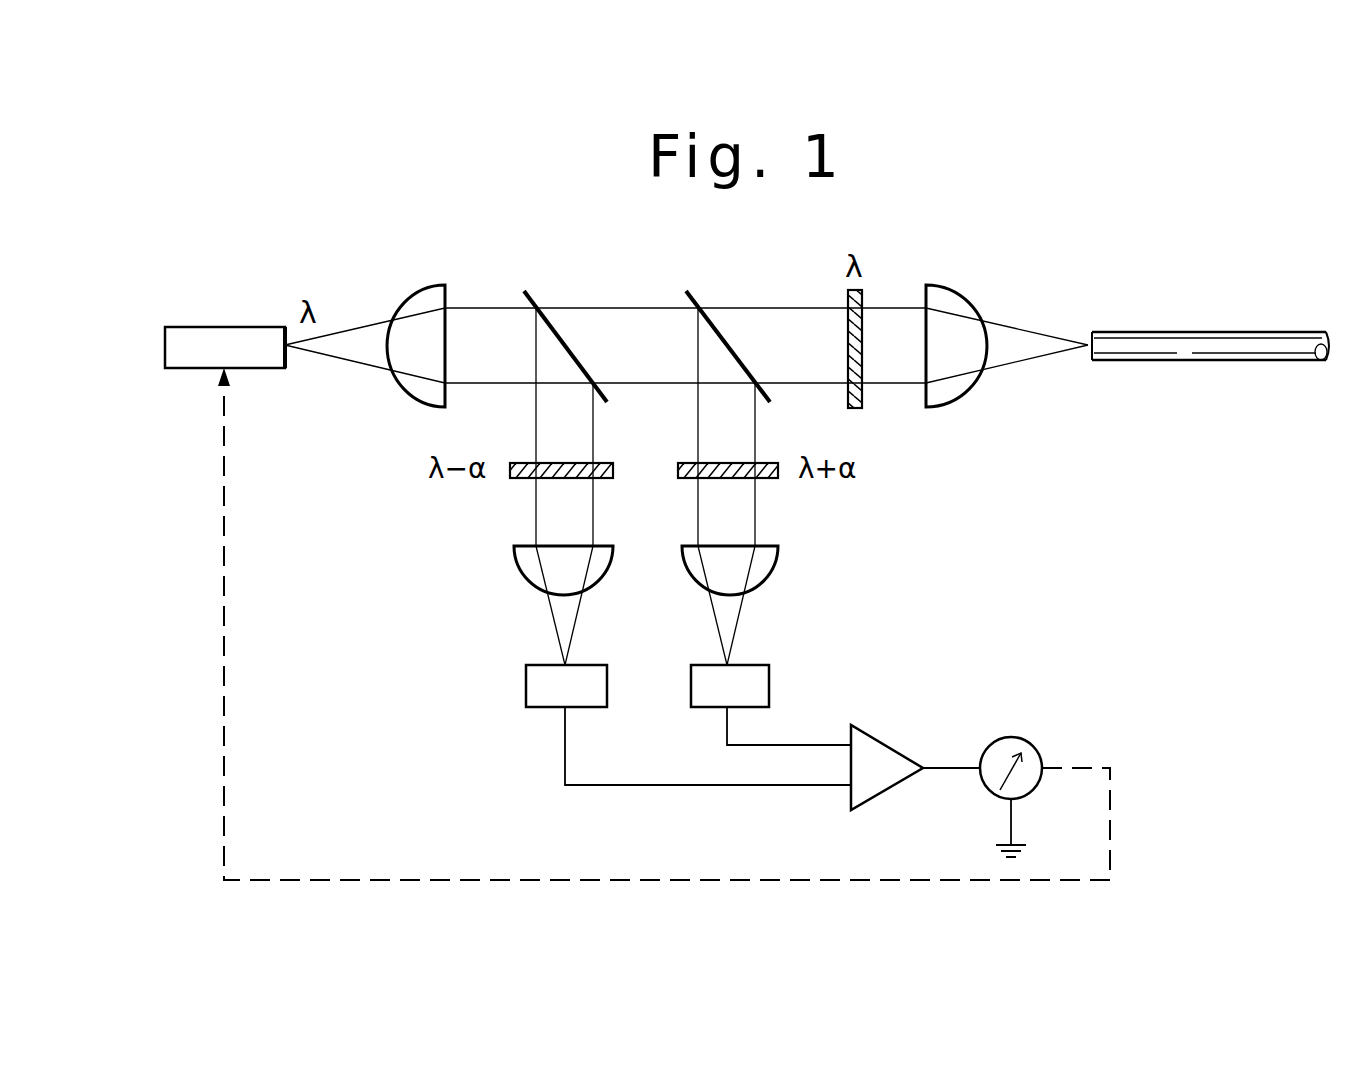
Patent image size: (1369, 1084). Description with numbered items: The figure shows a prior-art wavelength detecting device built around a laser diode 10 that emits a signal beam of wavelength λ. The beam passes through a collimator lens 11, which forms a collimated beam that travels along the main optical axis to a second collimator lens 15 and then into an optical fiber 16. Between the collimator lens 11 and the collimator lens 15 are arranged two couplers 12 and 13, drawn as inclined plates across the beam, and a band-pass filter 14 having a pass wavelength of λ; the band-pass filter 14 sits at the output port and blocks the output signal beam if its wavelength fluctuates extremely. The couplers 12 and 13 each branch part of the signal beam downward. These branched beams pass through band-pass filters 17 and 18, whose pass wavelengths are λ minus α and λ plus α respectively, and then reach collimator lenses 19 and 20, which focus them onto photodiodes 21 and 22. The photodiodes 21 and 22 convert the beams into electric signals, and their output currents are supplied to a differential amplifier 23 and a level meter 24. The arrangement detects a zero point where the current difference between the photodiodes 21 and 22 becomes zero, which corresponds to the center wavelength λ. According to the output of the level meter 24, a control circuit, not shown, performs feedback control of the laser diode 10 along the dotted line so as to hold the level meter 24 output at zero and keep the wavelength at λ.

The laser diode 10 is at (190, 327).
The collimator lens 11 is at (430, 285).
The coupler 12 is at (532, 295).
The coupler 13 is at (695, 295).
The band-pass filter 14 is at (865, 300).
The collimator lens 15 is at (967, 300).
The optical fiber 16 is at (1163, 332).
The band-pass filter 17 is at (607, 462).
The band-pass filter 18 is at (772, 462).
The collimator lens 19 is at (600, 545).
The collimator lens 20 is at (770, 545).
The photodiode 21 is at (590, 663).
The photodiode 22 is at (760, 663).
The differential amplifier 23 is at (883, 743).
The level meter 24 is at (1037, 752).